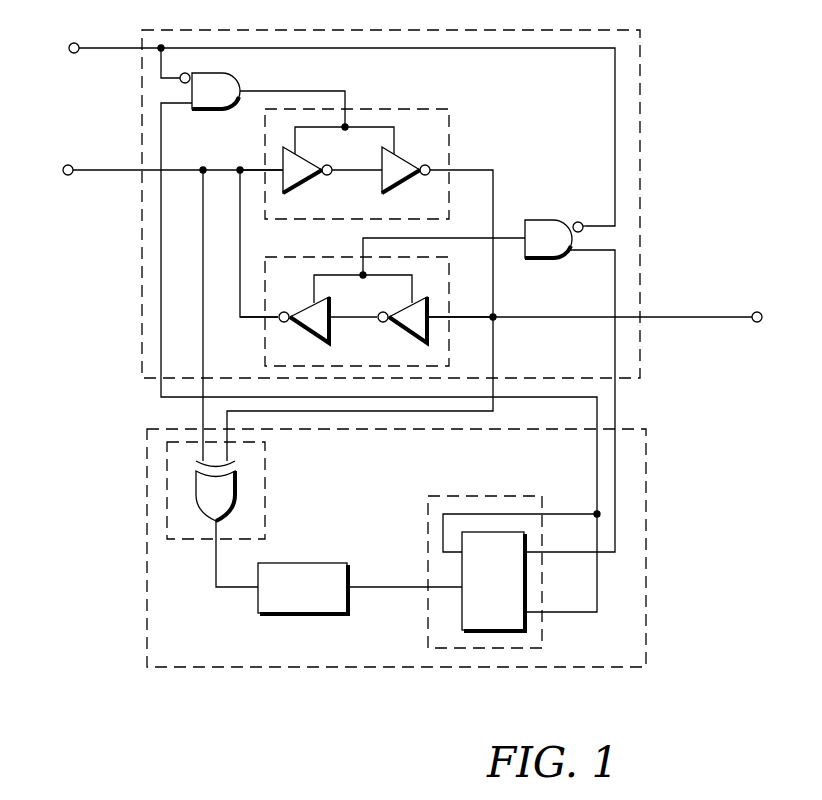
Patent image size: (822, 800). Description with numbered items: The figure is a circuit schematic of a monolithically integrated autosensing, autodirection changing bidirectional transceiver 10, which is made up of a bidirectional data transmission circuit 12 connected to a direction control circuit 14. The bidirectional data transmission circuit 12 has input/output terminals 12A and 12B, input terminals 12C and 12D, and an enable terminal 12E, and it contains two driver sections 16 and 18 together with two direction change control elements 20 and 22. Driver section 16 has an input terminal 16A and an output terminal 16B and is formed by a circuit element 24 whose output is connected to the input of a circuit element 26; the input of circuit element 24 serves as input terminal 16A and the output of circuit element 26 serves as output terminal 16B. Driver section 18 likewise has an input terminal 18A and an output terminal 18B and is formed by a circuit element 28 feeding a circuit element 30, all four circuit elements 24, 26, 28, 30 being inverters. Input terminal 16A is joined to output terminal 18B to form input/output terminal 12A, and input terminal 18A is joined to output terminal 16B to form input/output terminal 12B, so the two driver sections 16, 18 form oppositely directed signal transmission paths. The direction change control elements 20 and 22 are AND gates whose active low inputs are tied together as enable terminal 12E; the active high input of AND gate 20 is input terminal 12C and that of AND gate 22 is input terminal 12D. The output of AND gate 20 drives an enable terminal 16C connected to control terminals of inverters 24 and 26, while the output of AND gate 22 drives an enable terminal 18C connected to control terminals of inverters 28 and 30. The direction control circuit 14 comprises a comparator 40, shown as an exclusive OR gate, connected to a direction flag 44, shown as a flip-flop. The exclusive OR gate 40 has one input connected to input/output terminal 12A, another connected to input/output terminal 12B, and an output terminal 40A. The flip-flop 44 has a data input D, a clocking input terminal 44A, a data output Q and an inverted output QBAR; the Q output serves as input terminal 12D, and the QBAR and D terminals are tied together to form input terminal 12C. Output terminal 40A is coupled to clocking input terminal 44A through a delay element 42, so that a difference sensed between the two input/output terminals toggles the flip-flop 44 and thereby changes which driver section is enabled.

The bidirectional transceiver 10 is at (637, 722).
The bidirectional data transmission circuit 12 is at (640, 126).
The input/output terminal 12A is at (66, 165).
The input/output terminal 12B is at (761, 312).
The input terminal 12C is at (596, 476).
The input terminal 12D is at (567, 553).
The enable terminal 12E is at (73, 43).
The direction control circuit 14 is at (647, 505).
The driver section 16 is at (411, 108).
The input terminal 16A is at (255, 168).
The output terminal 16B is at (463, 168).
The enable terminal 16C is at (350, 100).
The driver section 18 is at (297, 256).
The input terminal 18A is at (465, 313).
The output terminal 18B is at (258, 320).
The enable terminal 18C is at (361, 248).
The direction change control element 20 is at (212, 110).
The direction change control element 22 is at (560, 261).
The circuit element 24 is at (305, 187).
The circuit element 26 is at (405, 187).
The circuit element 28 is at (410, 338).
The circuit element 30 is at (314, 338).
The comparator 40 is at (267, 490).
The output terminal 40A is at (214, 565).
The delay element 42 is at (290, 614).
The direction flag 44 is at (466, 495).
The clocking input terminal 44A is at (402, 585).